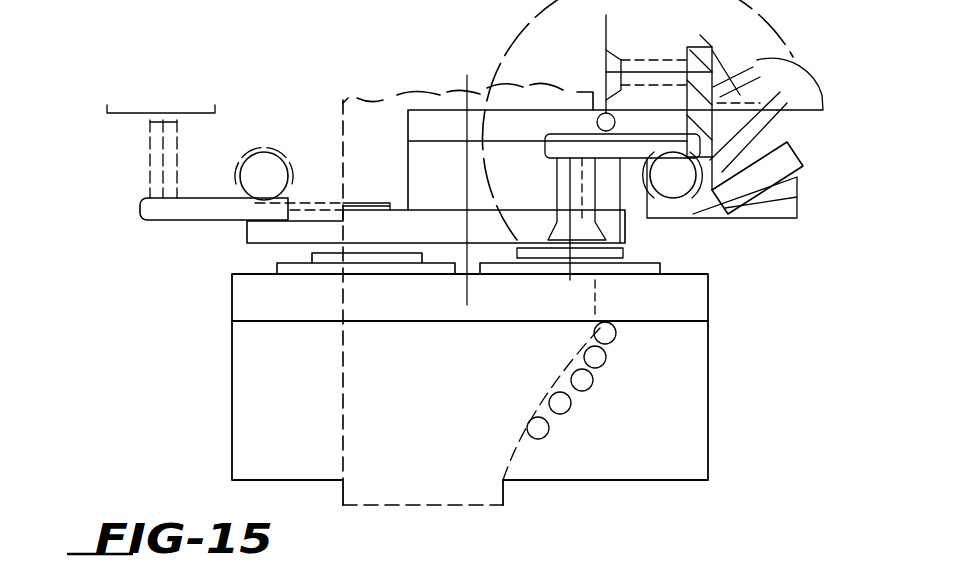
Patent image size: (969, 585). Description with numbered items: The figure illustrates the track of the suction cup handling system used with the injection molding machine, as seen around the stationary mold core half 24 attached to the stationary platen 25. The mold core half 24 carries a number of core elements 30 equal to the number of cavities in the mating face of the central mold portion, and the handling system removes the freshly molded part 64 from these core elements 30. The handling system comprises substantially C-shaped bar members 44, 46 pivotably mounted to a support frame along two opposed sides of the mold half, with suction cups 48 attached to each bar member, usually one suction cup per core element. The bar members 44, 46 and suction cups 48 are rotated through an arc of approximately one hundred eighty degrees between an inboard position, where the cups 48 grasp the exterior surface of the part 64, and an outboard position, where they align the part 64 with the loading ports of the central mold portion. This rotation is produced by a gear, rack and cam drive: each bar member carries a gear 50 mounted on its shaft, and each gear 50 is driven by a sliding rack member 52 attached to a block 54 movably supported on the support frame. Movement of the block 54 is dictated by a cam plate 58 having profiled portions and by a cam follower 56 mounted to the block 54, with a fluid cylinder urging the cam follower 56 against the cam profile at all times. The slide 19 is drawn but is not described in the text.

The slide 19 is at (623, 237).
The stationary mold core half 24 is at (248, 302).
The stationary platen 25 is at (698, 410).
The core elements 30 is at (630, 263).
The C-shaped bar member 44 is at (790, 150).
The C-shaped bar member 46 is at (177, 215).
The suction cups 48 is at (148, 122).
The gear 50 is at (263, 152).
The sliding rack member 52 is at (366, 202).
The block 54 is at (460, 185).
The cam follower 56 is at (598, 358).
The cam plate 58 is at (450, 413).
The freshly molded part 64 is at (107, 118).